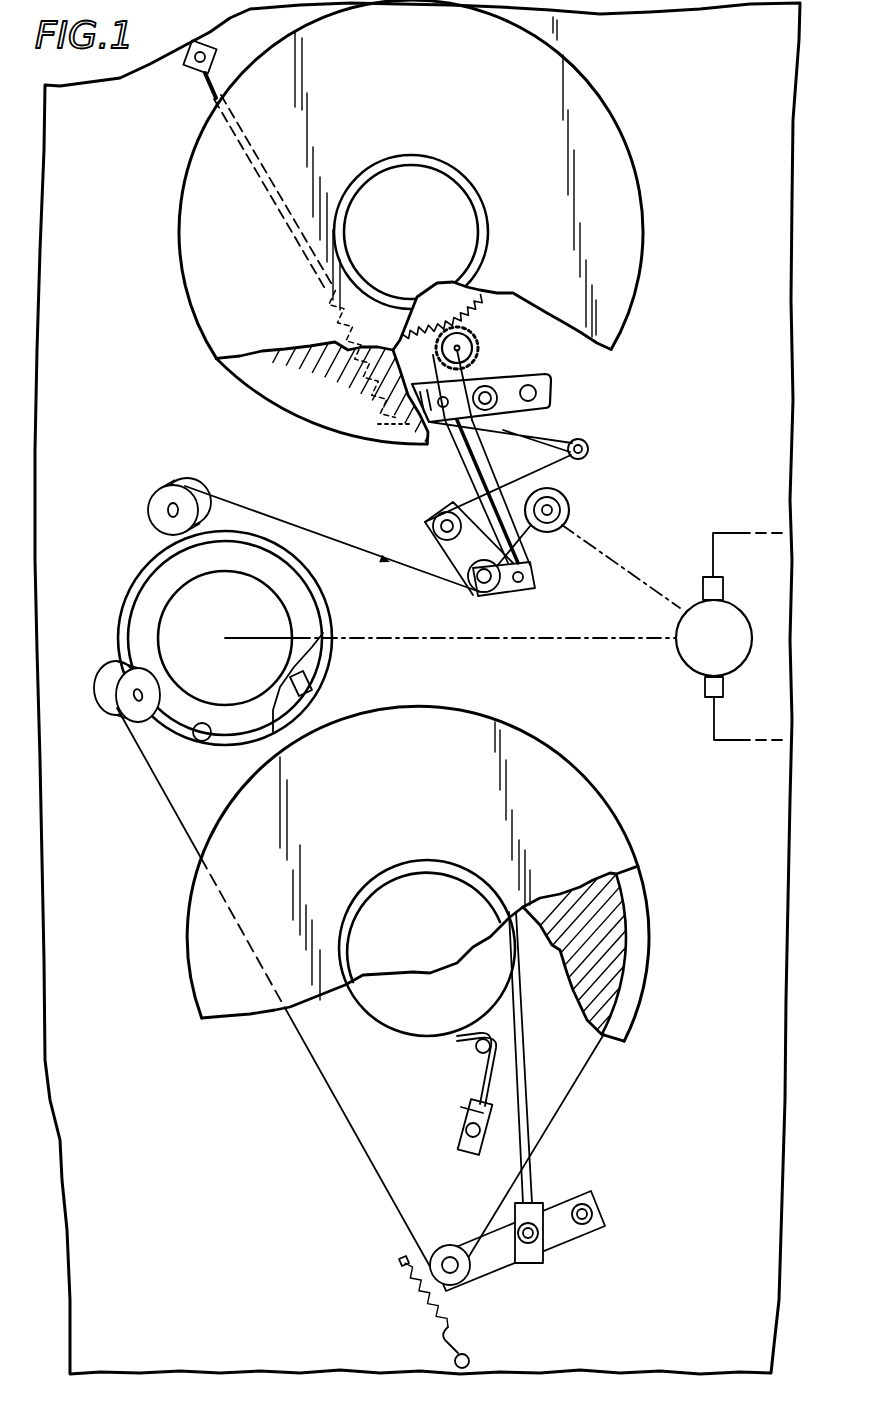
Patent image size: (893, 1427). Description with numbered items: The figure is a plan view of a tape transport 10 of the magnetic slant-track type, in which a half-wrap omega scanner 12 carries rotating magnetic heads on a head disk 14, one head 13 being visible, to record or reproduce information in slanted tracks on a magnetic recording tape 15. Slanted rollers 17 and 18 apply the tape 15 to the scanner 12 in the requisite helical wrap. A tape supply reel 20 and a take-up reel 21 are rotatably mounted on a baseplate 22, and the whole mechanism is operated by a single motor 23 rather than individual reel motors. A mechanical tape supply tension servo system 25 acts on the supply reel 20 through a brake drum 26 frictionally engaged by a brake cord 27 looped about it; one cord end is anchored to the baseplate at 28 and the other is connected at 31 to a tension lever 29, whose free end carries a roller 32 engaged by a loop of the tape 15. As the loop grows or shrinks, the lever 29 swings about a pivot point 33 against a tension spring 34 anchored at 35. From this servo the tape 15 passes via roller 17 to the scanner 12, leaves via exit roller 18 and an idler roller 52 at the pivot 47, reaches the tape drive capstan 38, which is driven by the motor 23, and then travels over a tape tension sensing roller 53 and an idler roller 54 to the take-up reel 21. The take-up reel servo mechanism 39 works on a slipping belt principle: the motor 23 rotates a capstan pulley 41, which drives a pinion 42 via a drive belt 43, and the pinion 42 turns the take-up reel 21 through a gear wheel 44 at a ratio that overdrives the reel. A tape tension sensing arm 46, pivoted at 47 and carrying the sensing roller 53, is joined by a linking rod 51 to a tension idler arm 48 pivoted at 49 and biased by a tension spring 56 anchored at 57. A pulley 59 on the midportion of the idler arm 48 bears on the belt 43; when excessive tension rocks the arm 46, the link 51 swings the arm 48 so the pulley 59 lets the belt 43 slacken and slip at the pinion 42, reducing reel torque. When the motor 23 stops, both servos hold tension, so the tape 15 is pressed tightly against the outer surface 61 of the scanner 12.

The tape transport 10 is at (214, 1136).
The half-wrap omega scanner 12 is at (128, 590).
The rotating magnetic recording and/or playback head 13 is at (315, 688).
The rotating head disk 14 is at (327, 654).
The magnetic recording tape 15 is at (290, 522).
The slanted roller 17 is at (122, 722).
The slanted roller (scanner exit roller) 18 is at (150, 508).
The tape supply reel 20 is at (190, 886).
The take-up reel 21 is at (180, 214).
The baseplate 22 is at (42, 860).
The motor 23 is at (730, 672).
The mechanical tape supply tension servo system 25 is at (476, 1065).
The brake drum 26 is at (464, 1007).
The brake cord 27 is at (523, 1063).
The brake cord anchor point 28 is at (462, 1122).
The tension lever 29 is at (488, 1273).
The brake cord connection point 31 is at (540, 1259).
The roller 32 is at (460, 1217).
The pivot point 33 is at (598, 1194).
The tension spring 34 is at (418, 1296).
The spring anchor point 35 is at (469, 1356).
The tape drive capstan 38 is at (566, 503).
The take-up reel servo mechanism 39 is at (467, 500).
The capstan pulley 41 is at (554, 530).
The pinion 42 is at (480, 341).
The drive belt 43 is at (520, 438).
The gear wheel 44 is at (470, 313).
The tape tension sensing arm 46 is at (536, 588).
The pivot of sensing arm 47 is at (470, 586).
The tension idler arm 48 is at (553, 399).
The pivot of idler arm 49 is at (534, 386).
The linking rod 51 is at (458, 456).
The idler roller 52 is at (483, 598).
The tape tension sensing roller 53 is at (432, 527).
The idler roller 54 is at (590, 448).
The tension spring 56 is at (345, 330).
The spring anchor point 57 is at (195, 76).
The pulley 59 is at (513, 374).
The outer surface of scanner 61 is at (205, 741).